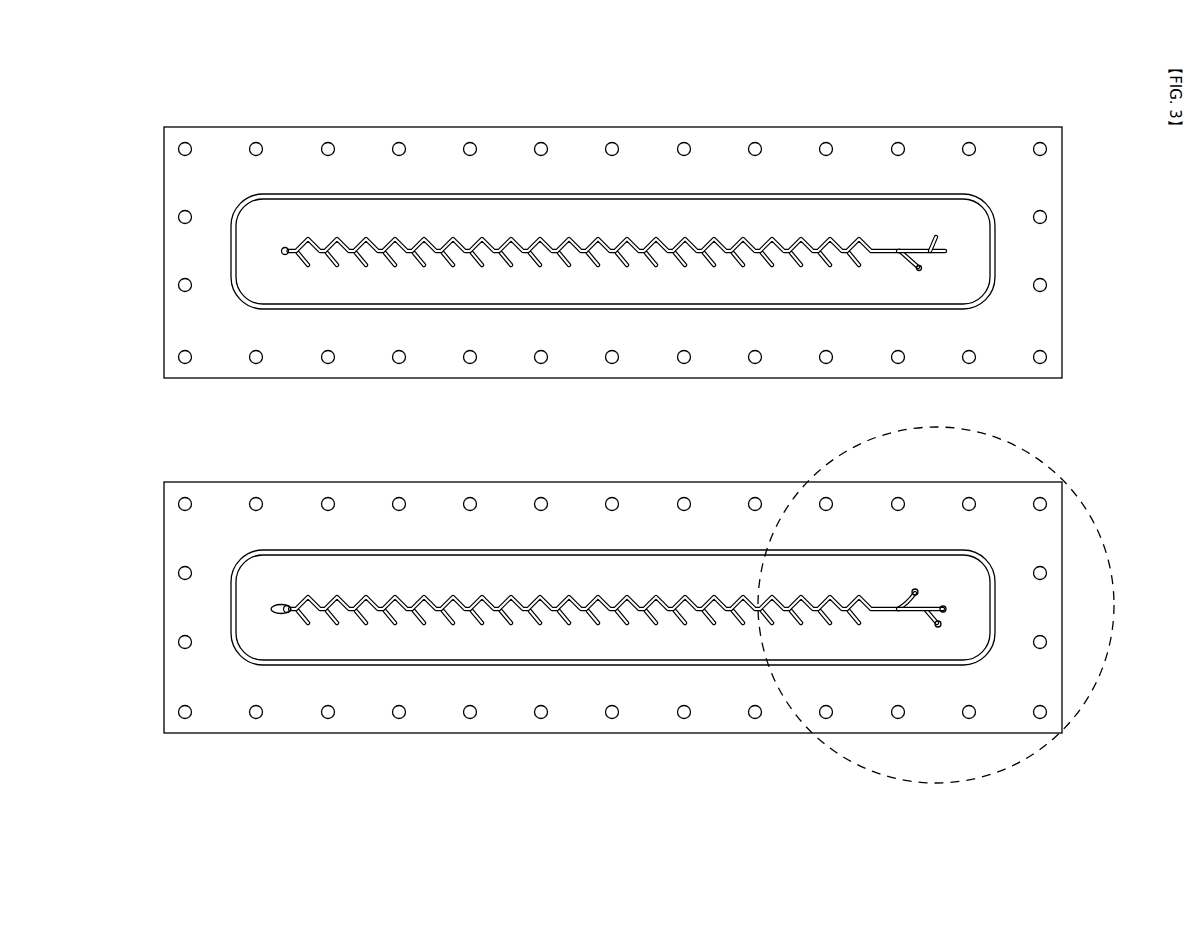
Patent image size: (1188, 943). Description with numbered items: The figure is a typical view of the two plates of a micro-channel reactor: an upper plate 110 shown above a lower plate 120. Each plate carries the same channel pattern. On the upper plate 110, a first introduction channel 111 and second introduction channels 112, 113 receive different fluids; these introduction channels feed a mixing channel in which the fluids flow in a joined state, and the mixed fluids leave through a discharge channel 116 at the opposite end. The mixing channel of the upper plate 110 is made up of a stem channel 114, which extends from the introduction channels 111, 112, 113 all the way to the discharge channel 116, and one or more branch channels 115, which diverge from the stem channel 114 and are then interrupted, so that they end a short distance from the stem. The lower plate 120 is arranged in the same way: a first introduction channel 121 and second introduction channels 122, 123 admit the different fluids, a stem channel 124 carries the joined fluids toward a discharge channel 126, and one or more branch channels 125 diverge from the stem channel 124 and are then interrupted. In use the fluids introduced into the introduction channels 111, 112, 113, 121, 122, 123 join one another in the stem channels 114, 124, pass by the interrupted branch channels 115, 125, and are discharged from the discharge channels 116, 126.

The upper plate 110 is at (162, 110).
The first introduction channel 111 is at (946, 249).
The second introduction channel 112 is at (932, 236).
The second introduction channel 113 is at (914, 265).
The stem channel 114 is at (818, 248).
The branch channels 115 is at (798, 259).
The discharge channel 116 is at (288, 248).
The lower plate 120 is at (164, 468).
The first introduction channel 121 is at (944, 606).
The second introduction channel 122 is at (937, 626).
The second introduction channel 123 is at (915, 589).
The stem channel 124 is at (784, 600).
The branch channels 125 is at (826, 620).
The discharge channel 126 is at (289, 605).